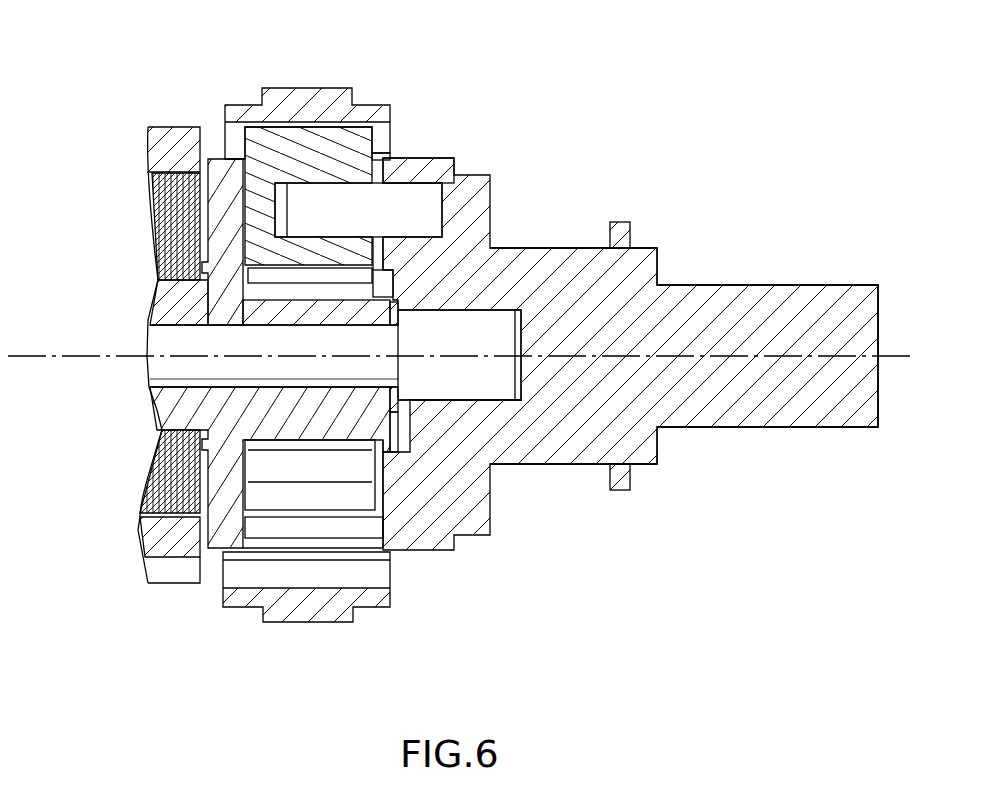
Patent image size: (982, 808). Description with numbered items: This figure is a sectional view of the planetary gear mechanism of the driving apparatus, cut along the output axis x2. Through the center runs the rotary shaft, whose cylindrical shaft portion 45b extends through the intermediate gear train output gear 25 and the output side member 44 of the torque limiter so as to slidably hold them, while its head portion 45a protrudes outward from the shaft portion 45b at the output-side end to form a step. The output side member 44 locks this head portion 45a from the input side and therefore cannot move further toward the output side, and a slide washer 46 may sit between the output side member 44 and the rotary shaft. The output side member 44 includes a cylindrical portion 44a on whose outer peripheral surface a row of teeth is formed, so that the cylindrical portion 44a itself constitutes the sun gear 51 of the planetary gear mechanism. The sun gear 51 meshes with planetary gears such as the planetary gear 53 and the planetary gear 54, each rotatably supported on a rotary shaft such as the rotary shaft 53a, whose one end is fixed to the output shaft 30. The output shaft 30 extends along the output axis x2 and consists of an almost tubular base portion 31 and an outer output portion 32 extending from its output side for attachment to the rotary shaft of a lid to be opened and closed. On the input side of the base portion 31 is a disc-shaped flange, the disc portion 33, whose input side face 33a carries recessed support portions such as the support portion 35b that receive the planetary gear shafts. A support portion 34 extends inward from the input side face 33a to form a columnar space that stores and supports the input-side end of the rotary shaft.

The intermediate gear train output gear 25 is at (172, 113).
The output shaft 30 is at (840, 244).
The base portion 31 is at (585, 277).
The outer output portion 32 is at (752, 298).
The disc portion 33 is at (428, 560).
The input side face 33a is at (385, 530).
The support portion 34 is at (455, 398).
The support portion 35b is at (405, 186).
The output side member 44 is at (214, 146).
The cylindrical portion 44a is at (300, 417).
The head portion 45a is at (482, 332).
The shaft portion 45b is at (157, 338).
The slide washer 46 is at (484, 402).
The sun gear 51 is at (382, 287).
The planetary gear 53 is at (357, 140).
The rotary shaft 53a is at (457, 188).
The planetary gear 54 is at (393, 414).
The output axis x2 is at (33, 353).